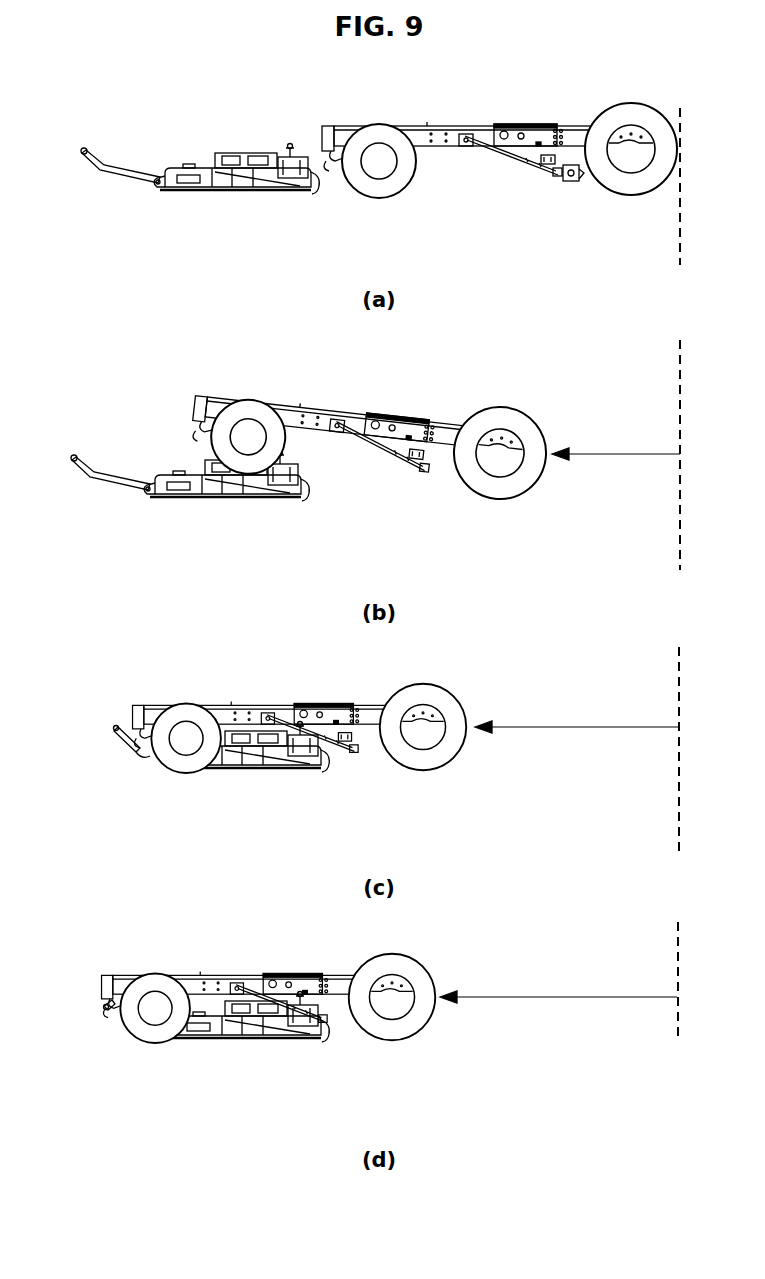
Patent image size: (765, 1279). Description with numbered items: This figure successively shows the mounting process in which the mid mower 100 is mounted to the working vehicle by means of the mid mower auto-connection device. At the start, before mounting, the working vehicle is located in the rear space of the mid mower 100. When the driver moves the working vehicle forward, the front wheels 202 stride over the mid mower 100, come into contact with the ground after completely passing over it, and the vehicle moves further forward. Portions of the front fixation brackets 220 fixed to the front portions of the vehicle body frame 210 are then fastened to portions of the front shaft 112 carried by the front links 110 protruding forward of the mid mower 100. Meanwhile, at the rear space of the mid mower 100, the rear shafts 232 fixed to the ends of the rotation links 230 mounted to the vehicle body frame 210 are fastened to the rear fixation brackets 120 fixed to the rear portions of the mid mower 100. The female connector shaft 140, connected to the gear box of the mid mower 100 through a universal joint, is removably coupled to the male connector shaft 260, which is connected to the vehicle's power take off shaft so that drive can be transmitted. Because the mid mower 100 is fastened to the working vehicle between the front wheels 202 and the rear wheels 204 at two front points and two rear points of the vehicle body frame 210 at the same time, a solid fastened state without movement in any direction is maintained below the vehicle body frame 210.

The mid mower 100 is at (185, 195).
The front links 110 is at (118, 178).
The front shaft 112 is at (86, 148).
The rear fixation brackets 120 is at (318, 194).
The female connector shaft 140 is at (282, 152).
The front wheels 202 is at (380, 188).
The rear wheels 204 is at (641, 188).
The vehicle body frame 210 is at (443, 126).
The front fixation brackets 220 is at (341, 130).
The rotation links 230 is at (500, 160).
The rear shafts 232 is at (558, 178).
The male connector shaft 260 is at (551, 158).